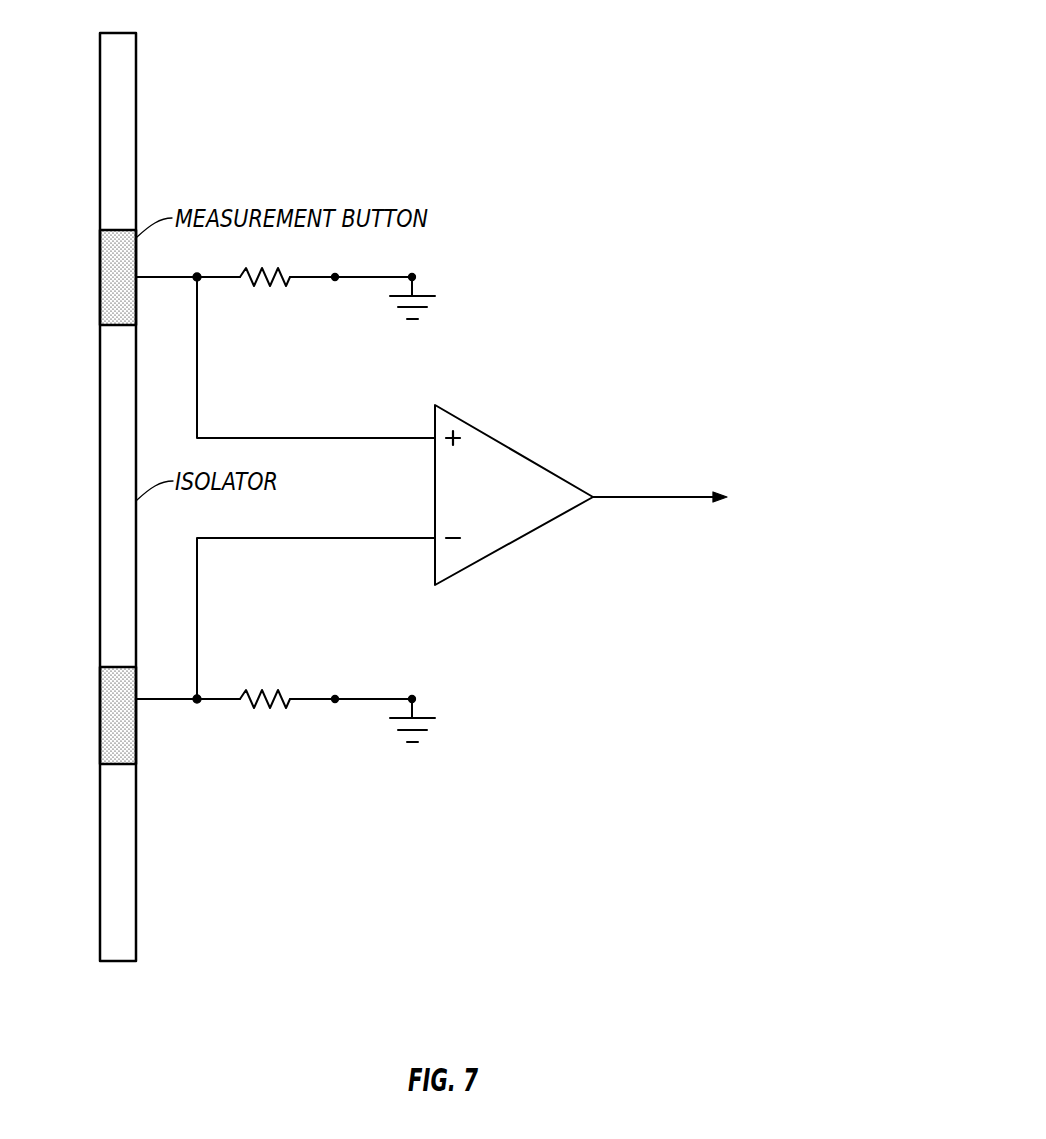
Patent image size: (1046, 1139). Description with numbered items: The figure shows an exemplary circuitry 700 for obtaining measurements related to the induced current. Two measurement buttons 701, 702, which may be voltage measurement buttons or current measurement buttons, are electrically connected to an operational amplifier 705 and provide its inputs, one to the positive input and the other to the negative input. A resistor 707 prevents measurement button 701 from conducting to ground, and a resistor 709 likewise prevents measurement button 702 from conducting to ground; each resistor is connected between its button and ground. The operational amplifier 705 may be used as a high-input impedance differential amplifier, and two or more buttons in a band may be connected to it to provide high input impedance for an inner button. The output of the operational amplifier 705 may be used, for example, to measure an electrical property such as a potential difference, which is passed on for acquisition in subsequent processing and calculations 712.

The circuitry 700 is at (660, 94).
The measurement button 701 is at (97, 277).
The measurement button 702 is at (97, 717).
The operational amplifier 705 is at (508, 442).
The resistor 707 is at (254, 282).
The resistor 709 is at (263, 705).
The subsequent processing and calculations 712 is at (800, 478).